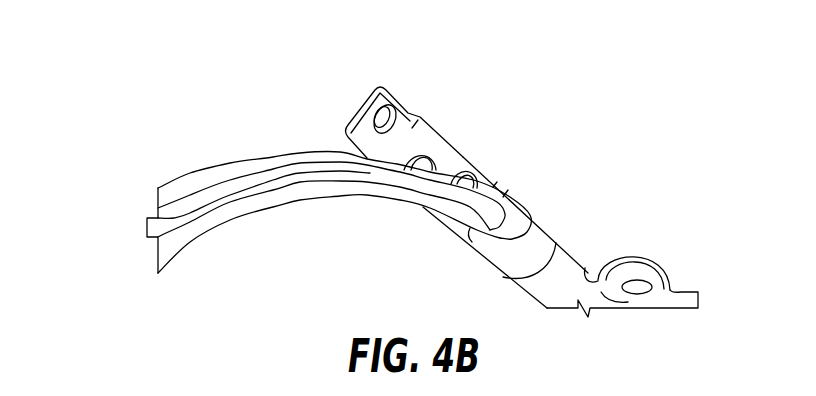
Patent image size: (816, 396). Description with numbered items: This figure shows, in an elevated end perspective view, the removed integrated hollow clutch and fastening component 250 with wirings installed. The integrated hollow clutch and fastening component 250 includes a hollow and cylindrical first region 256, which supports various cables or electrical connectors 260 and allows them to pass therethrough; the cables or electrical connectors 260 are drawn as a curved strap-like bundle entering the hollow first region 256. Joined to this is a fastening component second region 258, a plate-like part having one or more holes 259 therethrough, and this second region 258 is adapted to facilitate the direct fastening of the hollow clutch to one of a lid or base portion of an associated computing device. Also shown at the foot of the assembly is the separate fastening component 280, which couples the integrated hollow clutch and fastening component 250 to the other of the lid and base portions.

The integrated hollow clutch and fastening component 250 is at (570, 87).
The first region 256 is at (542, 233).
The fastening component second region 258 is at (435, 132).
The holes 259 is at (380, 118).
The cables or electrical connectors 260 is at (160, 243).
The separate fastening component 280 is at (648, 248).